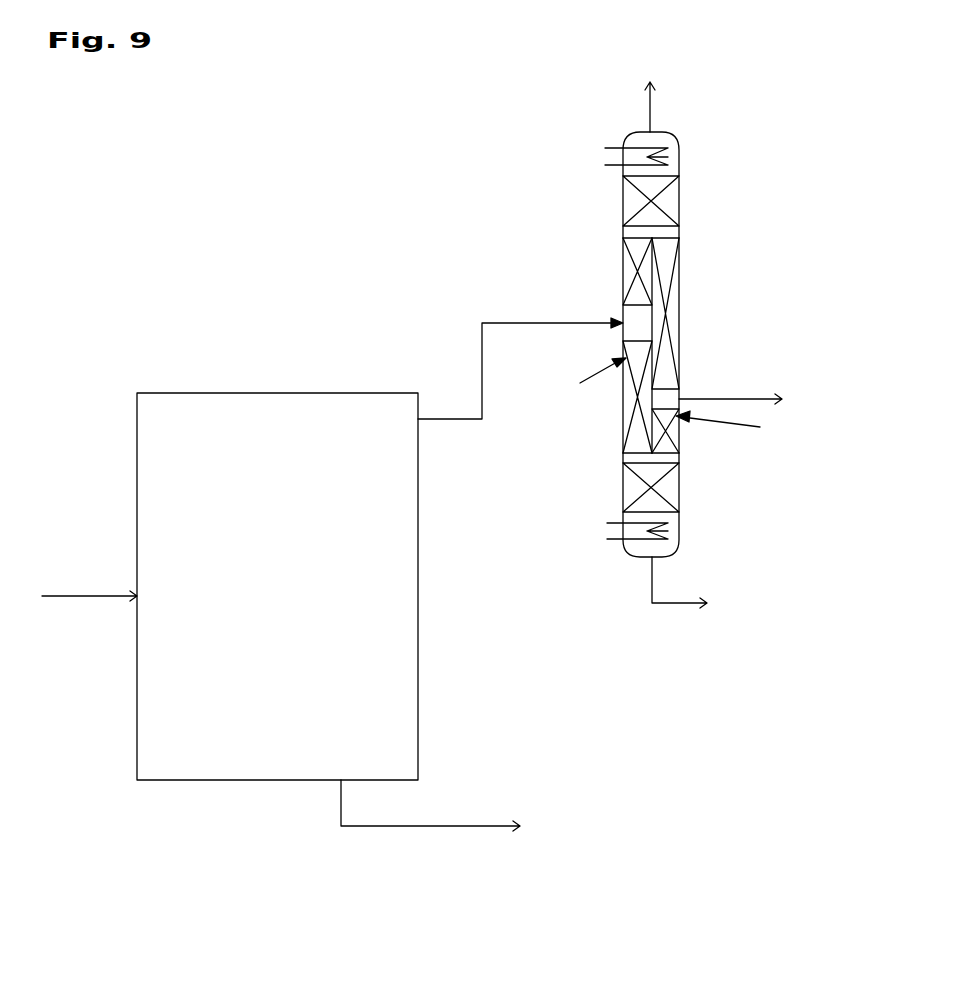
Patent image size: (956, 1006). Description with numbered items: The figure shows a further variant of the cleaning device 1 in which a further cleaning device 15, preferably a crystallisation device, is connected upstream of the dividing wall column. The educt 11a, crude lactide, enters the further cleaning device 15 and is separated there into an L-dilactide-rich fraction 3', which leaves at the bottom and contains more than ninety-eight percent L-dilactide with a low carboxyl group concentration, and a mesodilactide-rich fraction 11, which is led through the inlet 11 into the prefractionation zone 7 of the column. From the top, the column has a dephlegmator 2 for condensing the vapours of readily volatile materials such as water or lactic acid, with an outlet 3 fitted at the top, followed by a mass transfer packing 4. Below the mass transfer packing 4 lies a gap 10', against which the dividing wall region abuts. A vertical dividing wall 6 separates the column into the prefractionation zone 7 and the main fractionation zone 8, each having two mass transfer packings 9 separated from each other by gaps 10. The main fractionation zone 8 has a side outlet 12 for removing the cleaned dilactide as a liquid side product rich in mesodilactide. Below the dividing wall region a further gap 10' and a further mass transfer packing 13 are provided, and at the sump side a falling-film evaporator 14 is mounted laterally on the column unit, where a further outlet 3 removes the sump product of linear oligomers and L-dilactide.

The cleaning device 1 is at (591, 156).
The dephlegmator 2 is at (633, 158).
The outlet 3 is at (680, 333).
The L-dilactide-rich fraction 3' is at (430, 838).
The mass transfer packing 4 is at (632, 202).
The vertical dividing wall 6 is at (652, 275).
The prefractionation zone 7 is at (594, 380).
The main fractionation zone 8 is at (725, 427).
The mass transfer packings 9 is at (663, 257).
The gaps 10 is at (644, 360).
The gap 10' is at (607, 343).
The inlet / mesodilactide-rich fraction 11 is at (482, 350).
The educt 11a is at (84, 593).
The side outlet 12 is at (757, 395).
The mass transfer packing 13 is at (632, 488).
The falling-film evaporator 14 is at (635, 532).
The further cleaning device 15 is at (353, 706).